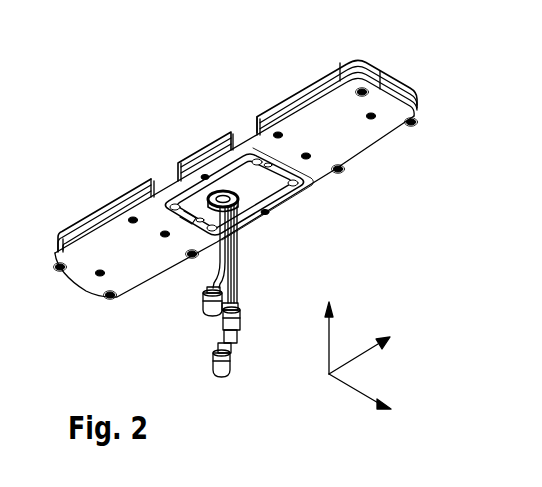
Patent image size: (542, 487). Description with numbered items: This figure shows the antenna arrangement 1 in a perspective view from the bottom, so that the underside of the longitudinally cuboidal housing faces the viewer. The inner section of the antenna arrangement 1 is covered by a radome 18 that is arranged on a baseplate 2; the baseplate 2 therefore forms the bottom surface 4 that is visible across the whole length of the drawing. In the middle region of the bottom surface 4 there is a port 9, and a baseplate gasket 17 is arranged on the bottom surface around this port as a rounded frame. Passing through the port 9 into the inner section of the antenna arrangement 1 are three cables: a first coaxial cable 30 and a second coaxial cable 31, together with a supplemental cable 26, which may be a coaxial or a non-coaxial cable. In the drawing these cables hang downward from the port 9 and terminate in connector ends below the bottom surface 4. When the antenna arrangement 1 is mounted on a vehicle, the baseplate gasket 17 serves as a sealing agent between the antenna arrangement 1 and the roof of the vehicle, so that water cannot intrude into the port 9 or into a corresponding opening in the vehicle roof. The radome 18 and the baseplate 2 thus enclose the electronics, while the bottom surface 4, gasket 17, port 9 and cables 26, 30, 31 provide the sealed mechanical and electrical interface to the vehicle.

The antenna arrangement 1 is at (78, 86).
The baseplate 2 is at (133, 203).
The bottom surface 4 is at (343, 135).
The radome 18 is at (318, 90).
The baseplate gasket 17 is at (306, 188).
The port 9 is at (268, 222).
The supplemental cable 26 is at (210, 277).
The first coaxial cable 30 is at (205, 289).
The second coaxial cable 31 is at (231, 275).